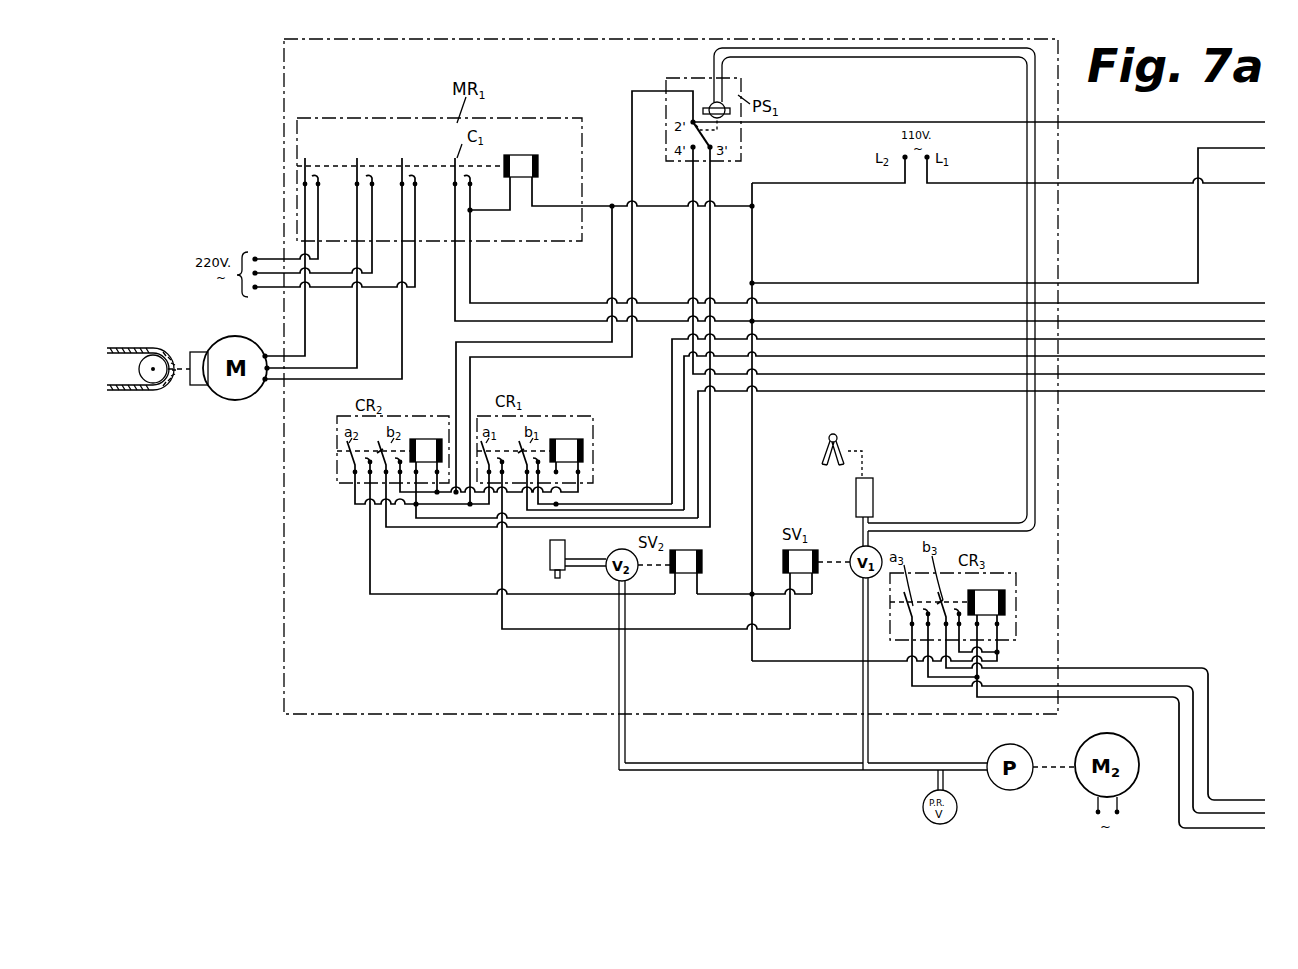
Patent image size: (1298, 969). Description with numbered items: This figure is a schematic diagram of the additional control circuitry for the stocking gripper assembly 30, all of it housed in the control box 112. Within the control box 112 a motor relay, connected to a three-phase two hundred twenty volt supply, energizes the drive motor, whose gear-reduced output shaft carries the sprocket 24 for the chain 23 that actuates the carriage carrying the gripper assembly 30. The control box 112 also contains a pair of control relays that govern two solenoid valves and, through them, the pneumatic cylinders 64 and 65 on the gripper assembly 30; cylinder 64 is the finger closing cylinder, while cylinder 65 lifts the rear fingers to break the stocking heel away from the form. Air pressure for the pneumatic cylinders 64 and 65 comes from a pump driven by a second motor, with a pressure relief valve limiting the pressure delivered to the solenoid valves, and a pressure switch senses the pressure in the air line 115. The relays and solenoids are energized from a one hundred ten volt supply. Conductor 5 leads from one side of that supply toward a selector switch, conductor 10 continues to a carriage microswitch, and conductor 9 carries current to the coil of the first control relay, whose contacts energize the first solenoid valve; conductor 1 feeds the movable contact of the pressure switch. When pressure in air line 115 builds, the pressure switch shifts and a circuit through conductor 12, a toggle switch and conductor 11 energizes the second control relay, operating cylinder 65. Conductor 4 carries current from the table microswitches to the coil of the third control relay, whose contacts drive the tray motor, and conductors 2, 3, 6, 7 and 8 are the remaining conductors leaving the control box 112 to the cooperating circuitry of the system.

The conductor 1 is at (987, 122).
The conductor 2 is at (1114, 717).
The conductor 3 is at (1097, 723).
The conductor 4 is at (1129, 731).
The conductor 5 is at (1017, 175).
The conductor 6 is at (1017, 211).
The conductor 7 is at (876, 261).
The conductor 8 is at (868, 257).
The conductor 9 is at (977, 417).
The conductor 10 is at (986, 429).
The conductor 11 is at (990, 265).
The conductor 12 is at (993, 450).
The chain 23 is at (115, 347).
The sprocket 24 is at (151, 373).
The gripper assembly 30 is at (820, 441).
The pneumatic cylinder 64 is at (875, 491).
The pneumatic cylinder 65 is at (550, 554).
The control box 112 is at (1038, 617).
The air line 115 is at (1027, 441).